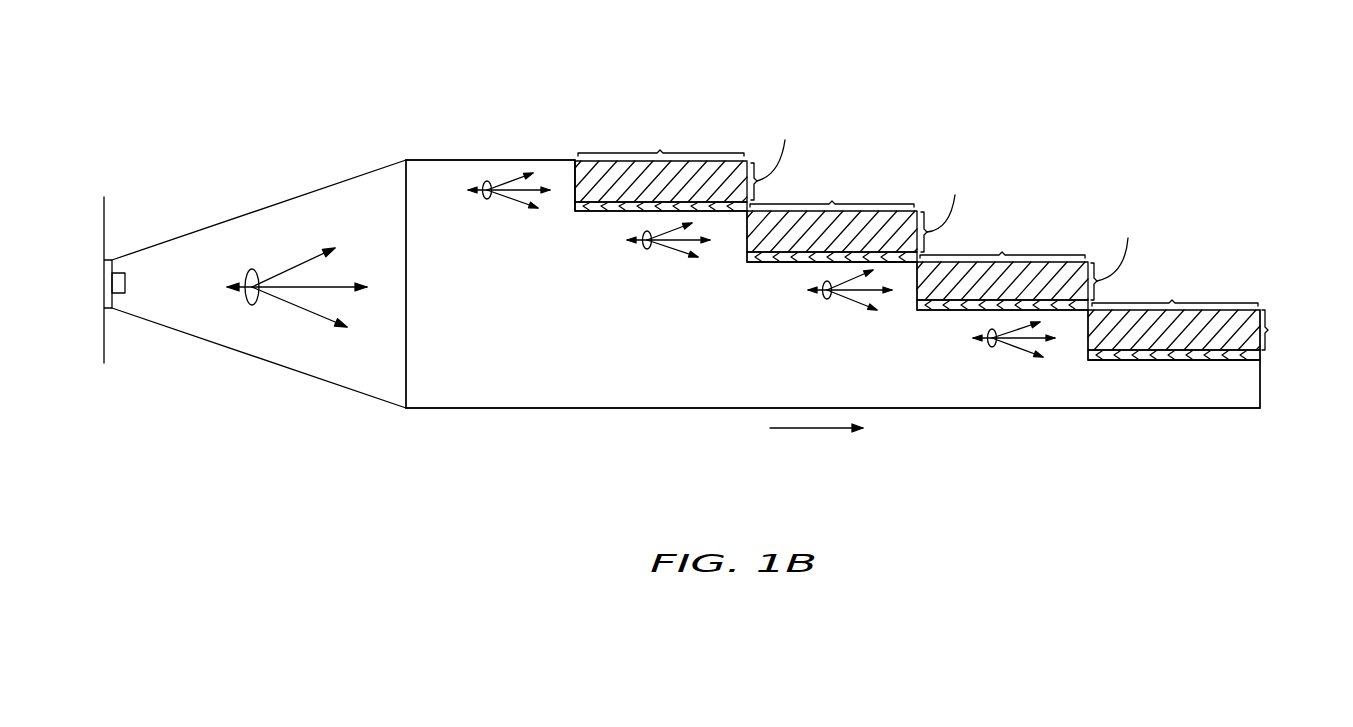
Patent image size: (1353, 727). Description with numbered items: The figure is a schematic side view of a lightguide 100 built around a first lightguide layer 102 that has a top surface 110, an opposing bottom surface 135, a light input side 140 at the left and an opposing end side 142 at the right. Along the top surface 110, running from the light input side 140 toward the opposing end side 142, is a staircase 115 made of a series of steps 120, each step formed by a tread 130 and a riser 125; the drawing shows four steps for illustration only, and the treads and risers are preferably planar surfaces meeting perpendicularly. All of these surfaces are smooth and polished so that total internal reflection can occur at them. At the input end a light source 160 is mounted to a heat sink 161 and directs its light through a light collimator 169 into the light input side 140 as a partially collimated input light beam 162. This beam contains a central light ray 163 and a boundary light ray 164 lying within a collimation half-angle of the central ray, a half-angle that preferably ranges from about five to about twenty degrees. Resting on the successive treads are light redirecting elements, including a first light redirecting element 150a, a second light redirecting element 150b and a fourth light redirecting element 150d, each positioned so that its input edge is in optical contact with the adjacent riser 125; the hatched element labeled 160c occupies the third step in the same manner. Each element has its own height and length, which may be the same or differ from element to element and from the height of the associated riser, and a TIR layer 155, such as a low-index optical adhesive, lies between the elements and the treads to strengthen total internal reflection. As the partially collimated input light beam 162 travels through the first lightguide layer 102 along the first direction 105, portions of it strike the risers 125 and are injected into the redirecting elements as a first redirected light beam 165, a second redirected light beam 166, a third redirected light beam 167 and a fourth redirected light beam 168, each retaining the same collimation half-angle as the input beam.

The lightguide 100 is at (706, 255).
The first lightguide layer 102 is at (600, 388).
The first direction 105 is at (800, 430).
The top surface 110 is at (441, 160).
The staircase 115 is at (914, 257).
The steps 120 is at (1230, 363).
The risers 125 is at (573, 177).
The treads 130 is at (597, 205).
The opposing bottom surface 135 is at (507, 410).
The light input side 140 is at (407, 363).
The opposing end side 142 is at (1262, 365).
The first light redirecting element 150a is at (642, 227).
The second light redirecting element 150b is at (792, 243).
The fourth light redirecting element 150d is at (1130, 330).
The TIR layer 155 is at (765, 262).
The light source 160 is at (125, 283).
The third light extraction element 160c is at (937, 283).
The heat sink 161 is at (104, 220).
The partially collimated input light beam 162 is at (302, 265).
The central light ray 163 is at (317, 282).
The boundary light ray 164 is at (303, 315).
The first redirected light beam 165 is at (487, 200).
The second redirected light beam 166 is at (647, 250).
The third redirected light beam 167 is at (827, 300).
The fourth redirected light beam 168 is at (992, 348).
The light collimator 169 is at (340, 183).